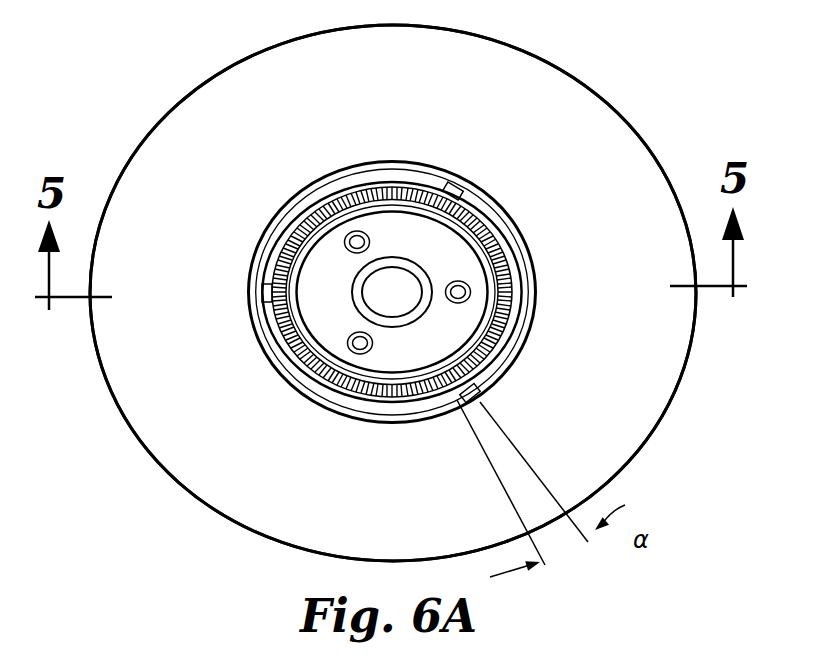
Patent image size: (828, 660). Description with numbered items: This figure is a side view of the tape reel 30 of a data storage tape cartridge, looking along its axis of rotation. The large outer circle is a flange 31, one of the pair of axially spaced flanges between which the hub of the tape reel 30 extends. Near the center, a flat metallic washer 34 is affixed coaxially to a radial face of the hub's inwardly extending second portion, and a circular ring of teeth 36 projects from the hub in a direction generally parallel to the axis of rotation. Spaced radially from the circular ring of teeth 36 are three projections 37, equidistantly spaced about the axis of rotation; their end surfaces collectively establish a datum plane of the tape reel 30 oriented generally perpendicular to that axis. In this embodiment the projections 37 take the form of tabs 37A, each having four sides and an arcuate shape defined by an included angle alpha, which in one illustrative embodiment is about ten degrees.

The tape reel 30 is at (606, 68).
The flange 31 is at (485, 50).
The flat metallic washer 34 is at (462, 255).
The circular ring of teeth 36 is at (323, 380).
The projections 37 is at (260, 290).
The tabs 37A is at (453, 185).